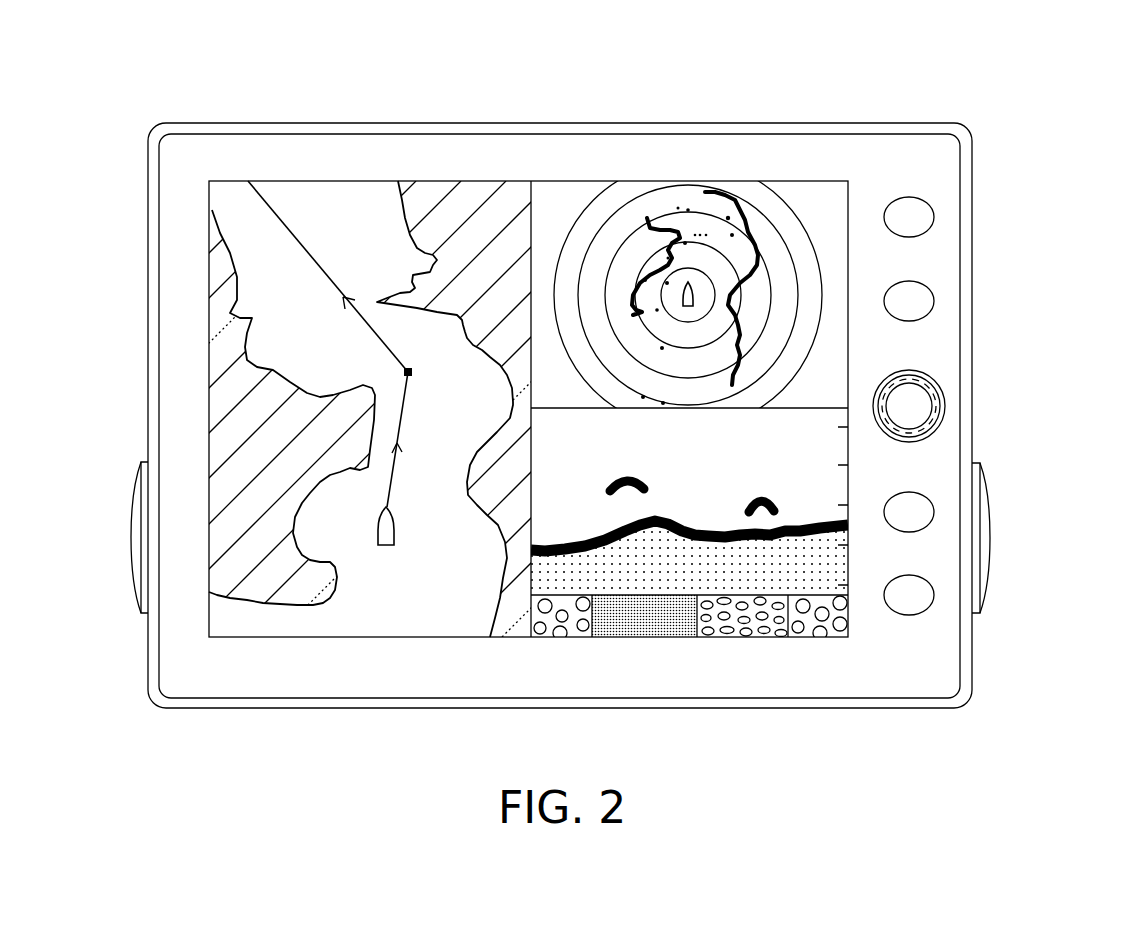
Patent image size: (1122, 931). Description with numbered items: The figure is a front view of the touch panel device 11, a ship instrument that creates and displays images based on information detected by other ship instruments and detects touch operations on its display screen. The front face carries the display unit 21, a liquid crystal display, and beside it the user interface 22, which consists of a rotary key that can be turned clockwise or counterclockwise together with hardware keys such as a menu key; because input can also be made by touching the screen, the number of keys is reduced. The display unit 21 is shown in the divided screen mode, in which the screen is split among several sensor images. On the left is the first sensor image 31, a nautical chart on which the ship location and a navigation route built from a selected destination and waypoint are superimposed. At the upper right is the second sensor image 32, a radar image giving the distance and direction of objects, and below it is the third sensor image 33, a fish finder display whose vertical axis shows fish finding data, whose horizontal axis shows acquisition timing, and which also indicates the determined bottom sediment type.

The touch panel device 11 is at (1037, 152).
The display unit 21 is at (856, 187).
The user interface 22 is at (947, 379).
The first sensor image 31 is at (208, 208).
The second sensor image 32 is at (847, 271).
The third sensor image 33 is at (850, 572).